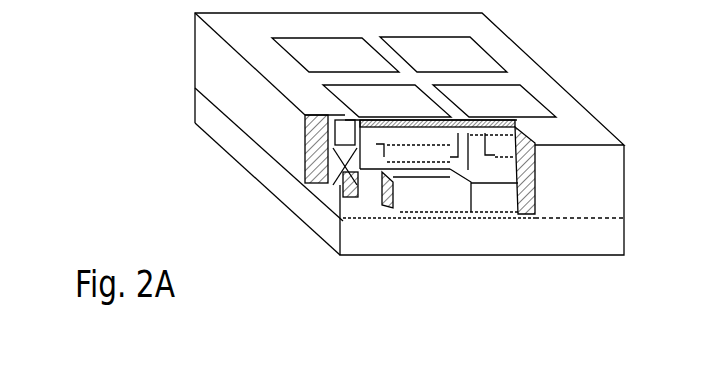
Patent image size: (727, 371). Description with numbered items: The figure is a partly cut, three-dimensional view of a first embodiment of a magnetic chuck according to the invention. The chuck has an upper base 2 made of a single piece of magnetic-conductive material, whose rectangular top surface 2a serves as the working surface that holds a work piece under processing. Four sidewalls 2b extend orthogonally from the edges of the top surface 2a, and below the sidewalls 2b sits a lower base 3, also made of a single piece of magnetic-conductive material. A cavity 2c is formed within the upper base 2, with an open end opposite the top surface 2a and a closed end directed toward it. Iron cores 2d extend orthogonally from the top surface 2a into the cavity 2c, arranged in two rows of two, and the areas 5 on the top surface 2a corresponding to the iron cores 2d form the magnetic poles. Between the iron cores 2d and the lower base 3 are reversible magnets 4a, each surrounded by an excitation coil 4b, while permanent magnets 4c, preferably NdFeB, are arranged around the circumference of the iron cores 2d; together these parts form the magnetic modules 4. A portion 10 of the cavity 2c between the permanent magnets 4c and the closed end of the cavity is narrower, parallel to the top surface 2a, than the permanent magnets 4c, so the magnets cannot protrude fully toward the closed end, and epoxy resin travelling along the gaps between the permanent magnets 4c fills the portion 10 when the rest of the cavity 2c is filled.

The upper base 2 is at (274, 137).
The top surface 2a is at (337, 113).
The sidewalls 2b is at (305, 151).
The cavity 2c is at (320, 176).
The iron cores 2d is at (345, 195).
The lower base 3 is at (560, 233).
The magnetic modules 4 is at (362, 253).
The reversible magnets 4a is at (352, 227).
The excitation coil 4b is at (388, 206).
The permanent magnets 4c is at (428, 146).
The areas 5 is at (520, 116).
The portion of the cavity 10 is at (670, 370).